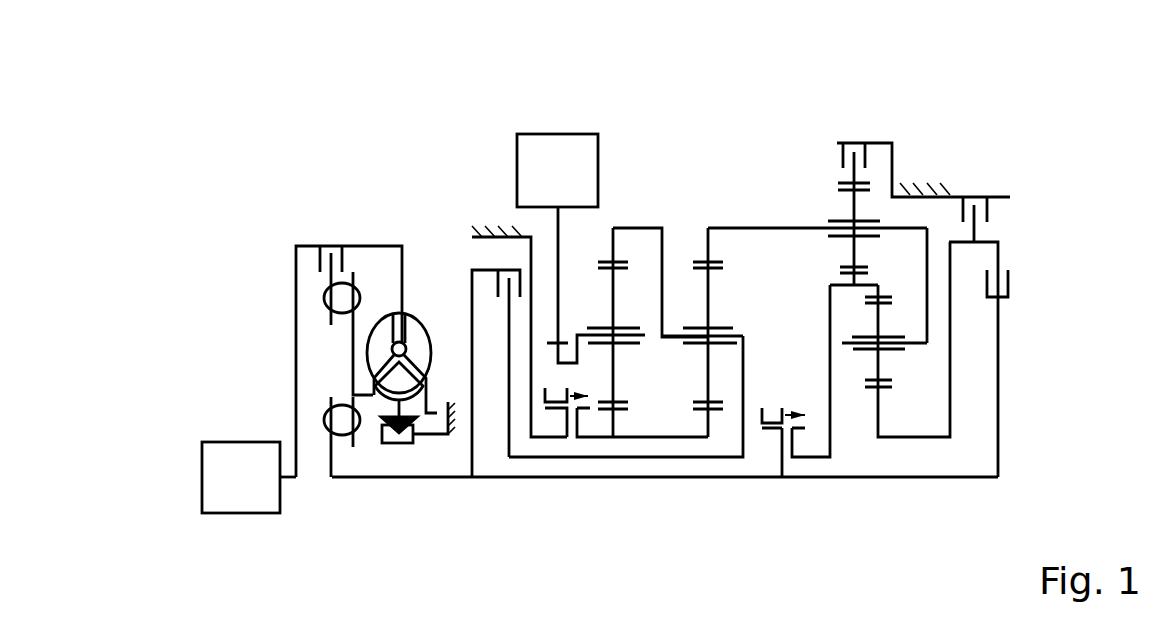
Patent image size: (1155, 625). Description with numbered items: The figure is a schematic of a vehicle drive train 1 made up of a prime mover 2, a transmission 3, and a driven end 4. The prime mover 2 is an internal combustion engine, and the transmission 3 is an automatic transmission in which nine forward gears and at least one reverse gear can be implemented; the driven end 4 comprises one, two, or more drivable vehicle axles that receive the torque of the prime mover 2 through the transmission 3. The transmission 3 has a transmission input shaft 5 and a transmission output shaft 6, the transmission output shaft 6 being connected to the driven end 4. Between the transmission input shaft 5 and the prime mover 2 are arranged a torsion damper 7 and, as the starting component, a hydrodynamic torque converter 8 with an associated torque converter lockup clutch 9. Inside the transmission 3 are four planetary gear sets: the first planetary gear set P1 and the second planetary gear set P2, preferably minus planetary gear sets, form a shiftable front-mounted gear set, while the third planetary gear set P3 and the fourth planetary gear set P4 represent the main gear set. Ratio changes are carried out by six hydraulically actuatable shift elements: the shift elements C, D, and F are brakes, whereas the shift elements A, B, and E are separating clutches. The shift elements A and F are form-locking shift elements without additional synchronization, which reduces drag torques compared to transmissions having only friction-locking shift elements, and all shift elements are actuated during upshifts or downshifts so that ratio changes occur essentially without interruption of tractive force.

The vehicle drive train 1 is at (375, 147).
The prime mover 2 is at (228, 450).
The transmission 3 is at (743, 166).
The driven end 4 is at (553, 150).
The transmission input shaft 5 is at (372, 478).
The transmission output shaft 6 is at (558, 353).
The torsion damper 7 is at (336, 362).
The hydrodynamic torque converter 8 is at (418, 305).
The torque converter lockup clutch 9 is at (326, 240).
The fifth hydraulically actuatable shift element E is at (506, 263).
The sixth hydraulically actuatable shift element F is at (582, 415).
The first hydraulically actuatable shift element A is at (772, 434).
The second hydraulically actuatable shift element B is at (1018, 284).
The third hydraulically actuatable shift element C is at (978, 190).
The fourth hydraulically actuatable shift element D is at (857, 138).
The first planetary gear set P1 is at (878, 452).
The second planetary gear set P2 is at (832, 206).
The third planetary gear set P3 is at (708, 217).
The fourth planetary gear set P4 is at (613, 217).